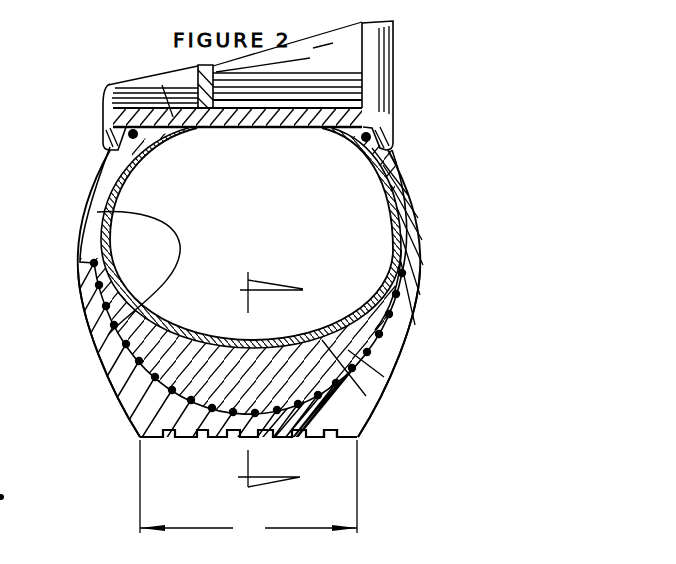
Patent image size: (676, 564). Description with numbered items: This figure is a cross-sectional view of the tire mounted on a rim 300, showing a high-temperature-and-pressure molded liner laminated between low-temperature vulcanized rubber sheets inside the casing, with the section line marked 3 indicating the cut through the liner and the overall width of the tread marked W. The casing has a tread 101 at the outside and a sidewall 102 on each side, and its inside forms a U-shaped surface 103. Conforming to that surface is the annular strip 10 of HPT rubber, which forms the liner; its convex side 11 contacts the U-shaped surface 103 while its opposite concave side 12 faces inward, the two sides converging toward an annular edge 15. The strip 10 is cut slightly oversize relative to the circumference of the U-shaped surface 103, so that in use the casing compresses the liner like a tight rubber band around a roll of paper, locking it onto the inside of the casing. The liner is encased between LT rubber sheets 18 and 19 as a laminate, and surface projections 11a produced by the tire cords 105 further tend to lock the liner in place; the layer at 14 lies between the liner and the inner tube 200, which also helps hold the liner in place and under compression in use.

The annular strip 10 is at (383, 375).
The convex side 11 is at (168, 221).
The surface projections 11a is at (137, 372).
The concave side 12 is at (168, 313).
The inner liner 14 is at (110, 231).
The annular edge 15 is at (396, 250).
The LT rubber sheet 18 is at (365, 395).
The LT rubber sheet 19 is at (357, 312).
The tread 101 is at (150, 437).
The sidewall 102 is at (398, 341).
The U-shaped surface 103 is at (380, 167).
The tire cords 105 is at (358, 438).
The inner tube 200 is at (352, 122).
The rim 300 is at (170, 140).
The section line 3- 3 is at (278, 381).
The tread width W is at (248, 489).